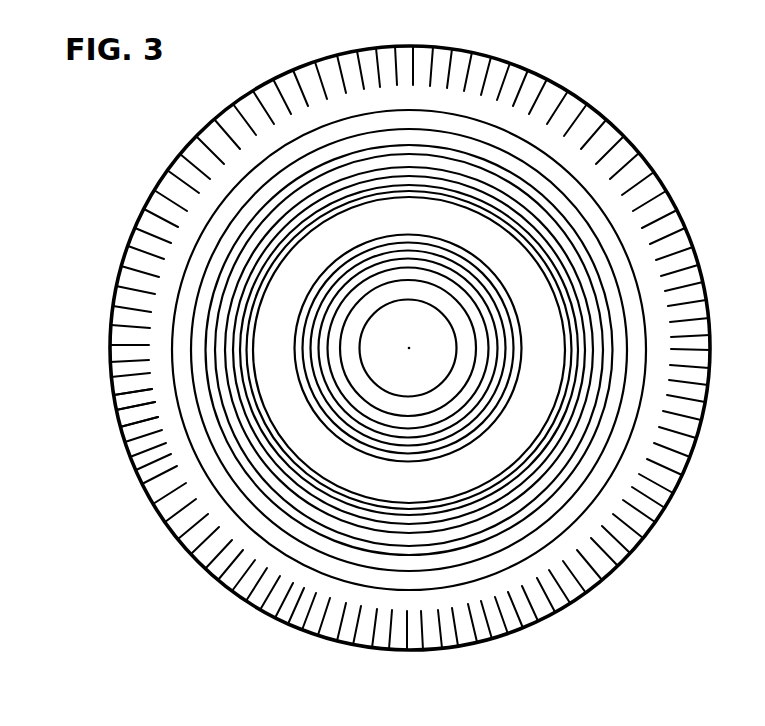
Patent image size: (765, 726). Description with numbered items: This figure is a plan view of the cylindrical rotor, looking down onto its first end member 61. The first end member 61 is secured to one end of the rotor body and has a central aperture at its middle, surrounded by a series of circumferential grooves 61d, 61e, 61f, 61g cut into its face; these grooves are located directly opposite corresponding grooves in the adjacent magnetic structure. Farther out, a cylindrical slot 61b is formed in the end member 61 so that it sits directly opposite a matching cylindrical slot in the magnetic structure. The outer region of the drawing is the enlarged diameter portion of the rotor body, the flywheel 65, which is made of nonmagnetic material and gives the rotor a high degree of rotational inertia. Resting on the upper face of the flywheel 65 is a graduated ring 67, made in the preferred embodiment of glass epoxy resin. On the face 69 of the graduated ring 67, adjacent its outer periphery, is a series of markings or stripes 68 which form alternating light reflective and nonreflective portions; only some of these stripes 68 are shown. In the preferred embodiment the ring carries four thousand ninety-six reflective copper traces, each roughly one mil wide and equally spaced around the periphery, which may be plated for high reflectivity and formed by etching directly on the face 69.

The first end member 61 is at (323, 415).
The cylindrical slot 61b is at (313, 463).
The circumferential groove 61d is at (412, 425).
The circumferential groove 61e is at (385, 445).
The circumferential groove 61f is at (268, 448).
The circumferential groove 61g is at (240, 452).
The flywheel 65 is at (110, 322).
The graduated ring 67 is at (163, 362).
The markings or stripes 68 is at (137, 250).
The face of the graduated ring 69 is at (127, 410).